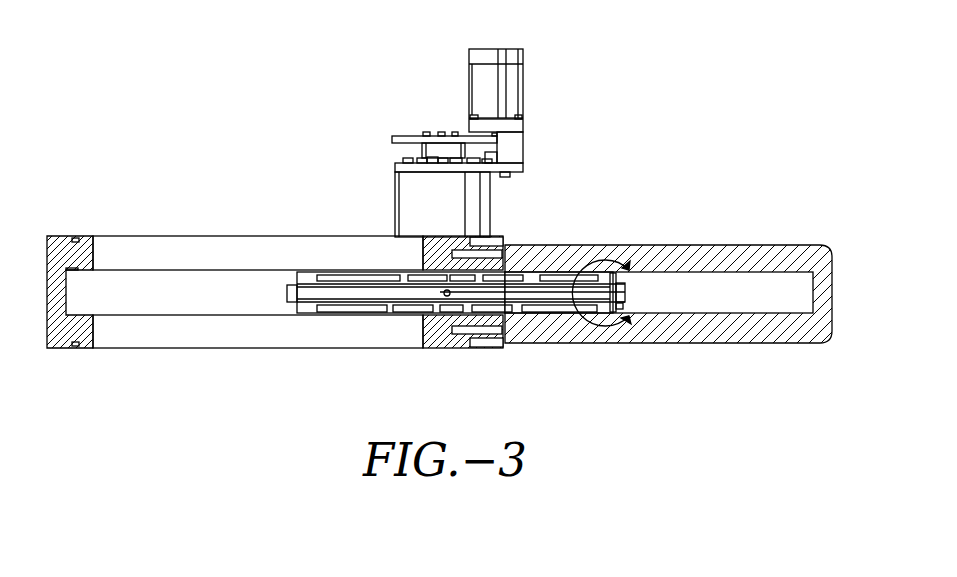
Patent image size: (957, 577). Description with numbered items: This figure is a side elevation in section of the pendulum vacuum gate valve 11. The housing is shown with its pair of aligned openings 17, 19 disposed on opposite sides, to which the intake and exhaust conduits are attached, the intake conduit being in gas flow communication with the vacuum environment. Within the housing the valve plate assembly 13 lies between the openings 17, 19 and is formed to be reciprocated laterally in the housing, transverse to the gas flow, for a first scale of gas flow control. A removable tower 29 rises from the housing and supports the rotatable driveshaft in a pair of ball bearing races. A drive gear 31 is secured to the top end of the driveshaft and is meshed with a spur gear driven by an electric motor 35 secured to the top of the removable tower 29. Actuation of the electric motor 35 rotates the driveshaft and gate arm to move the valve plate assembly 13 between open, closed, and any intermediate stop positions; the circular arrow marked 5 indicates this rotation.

The rotation direction arrow 5 is at (608, 293).
The pendulum vacuum gate valve 11 is at (727, 194).
The valve plate assembly 13 is at (385, 293).
The opening 17 is at (178, 253).
The opening 19 is at (192, 333).
The removable tower 29 is at (397, 200).
The drive gear 31 is at (408, 137).
The electric motor 35 is at (528, 93).